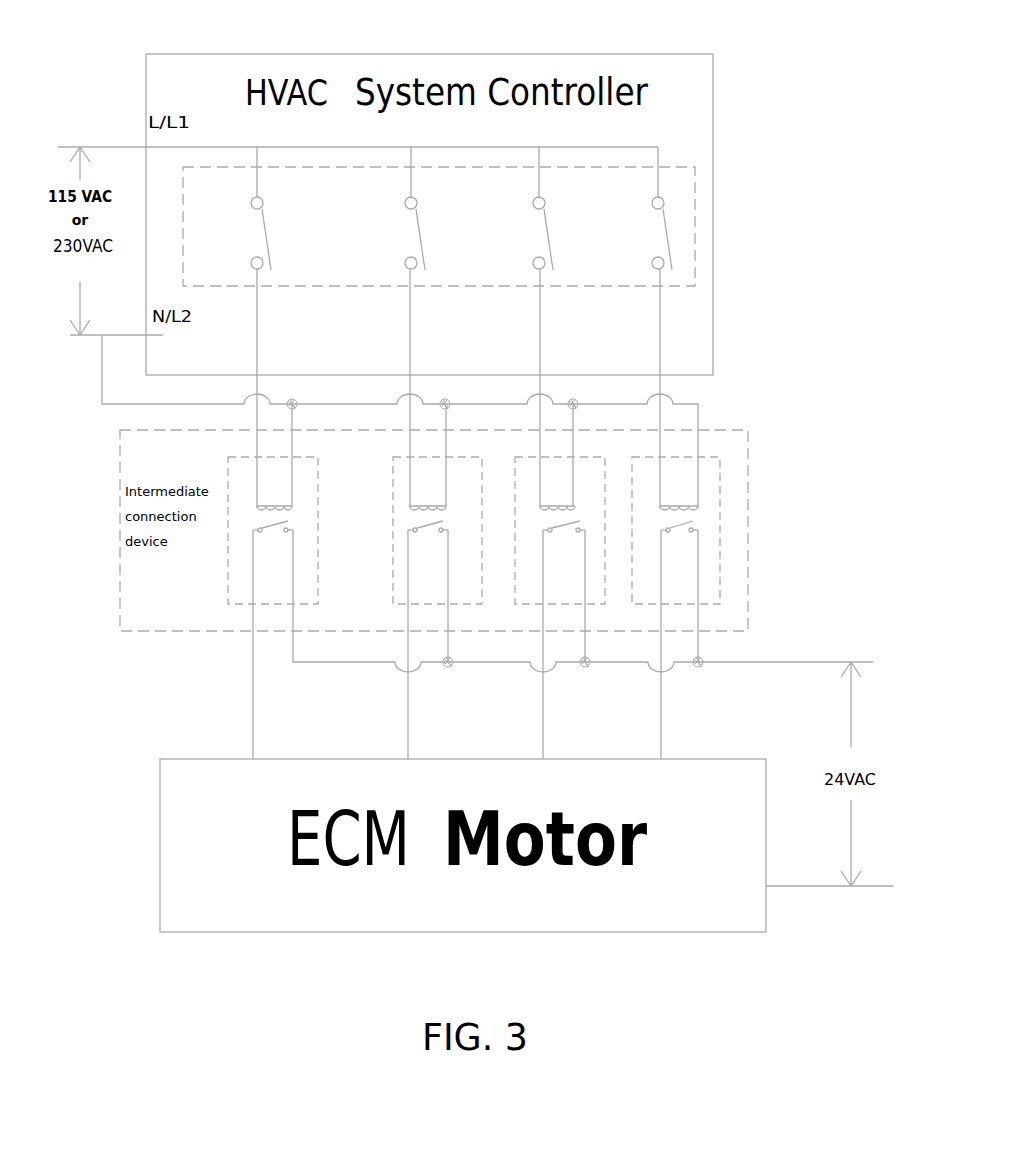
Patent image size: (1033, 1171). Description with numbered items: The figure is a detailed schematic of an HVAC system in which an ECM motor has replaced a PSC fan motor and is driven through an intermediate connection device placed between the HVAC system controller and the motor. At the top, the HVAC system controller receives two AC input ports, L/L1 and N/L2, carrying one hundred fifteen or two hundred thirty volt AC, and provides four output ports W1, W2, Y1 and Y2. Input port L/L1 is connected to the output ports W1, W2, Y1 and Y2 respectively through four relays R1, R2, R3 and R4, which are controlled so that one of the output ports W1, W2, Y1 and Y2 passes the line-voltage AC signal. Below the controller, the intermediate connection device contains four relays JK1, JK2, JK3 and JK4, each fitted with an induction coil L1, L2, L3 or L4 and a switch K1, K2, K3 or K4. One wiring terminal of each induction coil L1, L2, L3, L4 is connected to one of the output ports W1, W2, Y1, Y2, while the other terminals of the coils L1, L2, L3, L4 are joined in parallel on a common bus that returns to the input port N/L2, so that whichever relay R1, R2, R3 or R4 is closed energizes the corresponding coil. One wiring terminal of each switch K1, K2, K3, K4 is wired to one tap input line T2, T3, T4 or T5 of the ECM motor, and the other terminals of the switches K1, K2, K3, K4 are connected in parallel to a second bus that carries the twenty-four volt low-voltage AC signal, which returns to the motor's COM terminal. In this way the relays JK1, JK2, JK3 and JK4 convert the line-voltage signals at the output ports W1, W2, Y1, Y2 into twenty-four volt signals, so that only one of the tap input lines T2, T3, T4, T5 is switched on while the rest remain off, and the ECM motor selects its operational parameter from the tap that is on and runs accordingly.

The relay R1 is at (242, 208).
The relay R2 is at (394, 208).
The relay R3 is at (520, 208).
The relay R4 is at (642, 208).
The output port W1 is at (284, 388).
The output port W2 is at (385, 388).
The output port Y1 is at (511, 388).
The output port Y2 is at (628, 388).
The relay JK1 is at (263, 504).
The relay JK2 is at (423, 504).
The relay JK3 is at (551, 504).
The relay JK4 is at (670, 530).
The induction coil L1 is at (274, 457).
The induction coil L2 is at (428, 457).
The induction coil L3 is at (557, 457).
The induction coil L4 is at (679, 496).
The switch K1 is at (273, 542).
The switch K2 is at (428, 541).
The switch K3 is at (564, 541).
The switch K4 is at (679, 541).
The tap input line T2 is at (226, 644).
The tap input line T3 is at (382, 644).
The tap input line T4 is at (514, 644).
The tap input line T5 is at (635, 644).
The motor common terminal COM is at (790, 886).